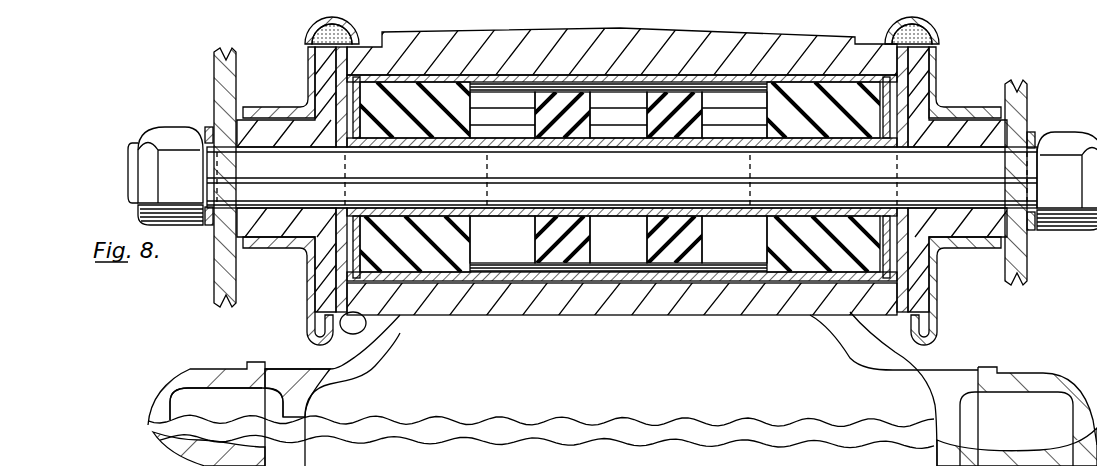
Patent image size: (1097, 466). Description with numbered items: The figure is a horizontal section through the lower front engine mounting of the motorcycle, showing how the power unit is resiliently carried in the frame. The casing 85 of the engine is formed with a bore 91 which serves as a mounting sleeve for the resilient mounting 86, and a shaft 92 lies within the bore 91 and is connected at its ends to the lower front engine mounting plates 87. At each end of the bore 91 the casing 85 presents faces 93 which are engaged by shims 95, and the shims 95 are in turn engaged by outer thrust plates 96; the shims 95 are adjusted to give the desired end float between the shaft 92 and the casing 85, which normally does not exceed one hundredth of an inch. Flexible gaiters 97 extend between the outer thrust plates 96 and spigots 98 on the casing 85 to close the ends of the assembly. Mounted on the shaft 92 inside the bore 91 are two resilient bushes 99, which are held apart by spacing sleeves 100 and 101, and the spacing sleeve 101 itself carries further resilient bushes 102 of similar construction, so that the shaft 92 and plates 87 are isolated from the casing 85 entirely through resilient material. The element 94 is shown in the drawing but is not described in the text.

The casing 85 is at (923, 367).
The resilient mounting 86 is at (821, 258).
The lower front engine mounting plates 87 is at (222, 83).
The bore 91 is at (649, 243).
The shaft 92 is at (984, 188).
The faces 93 is at (363, 324).
The left flange cup 94 is at (333, 278).
The shims 95 is at (310, 50).
The outer thrust plates 96 is at (327, 54).
The flexible gaiters 97 is at (935, 300).
The spigots 98 is at (890, 60).
The resilient bushes 99 is at (814, 326).
The spacing sleeve 100 is at (710, 282).
The spacing sleeve 101 is at (732, 228).
The resilient bushes 102 is at (592, 247).